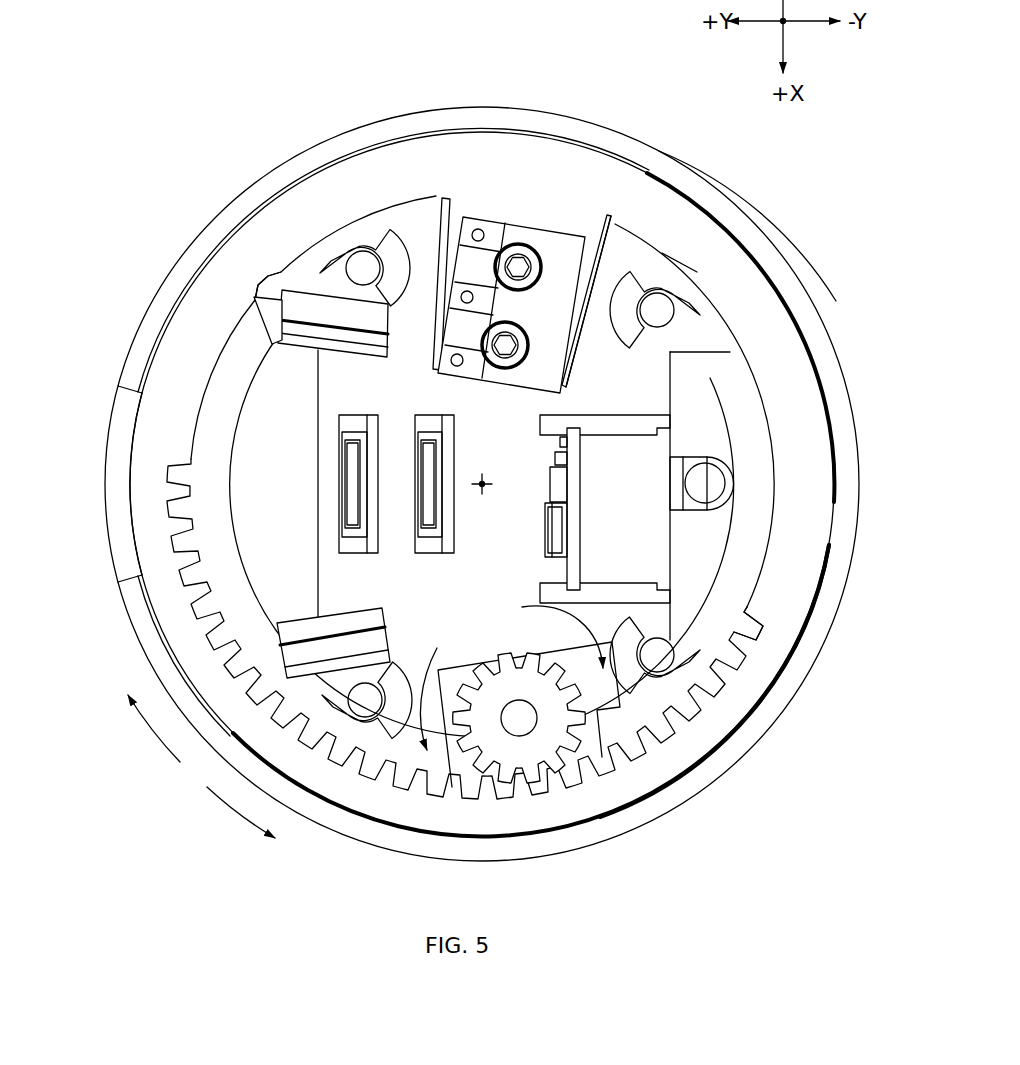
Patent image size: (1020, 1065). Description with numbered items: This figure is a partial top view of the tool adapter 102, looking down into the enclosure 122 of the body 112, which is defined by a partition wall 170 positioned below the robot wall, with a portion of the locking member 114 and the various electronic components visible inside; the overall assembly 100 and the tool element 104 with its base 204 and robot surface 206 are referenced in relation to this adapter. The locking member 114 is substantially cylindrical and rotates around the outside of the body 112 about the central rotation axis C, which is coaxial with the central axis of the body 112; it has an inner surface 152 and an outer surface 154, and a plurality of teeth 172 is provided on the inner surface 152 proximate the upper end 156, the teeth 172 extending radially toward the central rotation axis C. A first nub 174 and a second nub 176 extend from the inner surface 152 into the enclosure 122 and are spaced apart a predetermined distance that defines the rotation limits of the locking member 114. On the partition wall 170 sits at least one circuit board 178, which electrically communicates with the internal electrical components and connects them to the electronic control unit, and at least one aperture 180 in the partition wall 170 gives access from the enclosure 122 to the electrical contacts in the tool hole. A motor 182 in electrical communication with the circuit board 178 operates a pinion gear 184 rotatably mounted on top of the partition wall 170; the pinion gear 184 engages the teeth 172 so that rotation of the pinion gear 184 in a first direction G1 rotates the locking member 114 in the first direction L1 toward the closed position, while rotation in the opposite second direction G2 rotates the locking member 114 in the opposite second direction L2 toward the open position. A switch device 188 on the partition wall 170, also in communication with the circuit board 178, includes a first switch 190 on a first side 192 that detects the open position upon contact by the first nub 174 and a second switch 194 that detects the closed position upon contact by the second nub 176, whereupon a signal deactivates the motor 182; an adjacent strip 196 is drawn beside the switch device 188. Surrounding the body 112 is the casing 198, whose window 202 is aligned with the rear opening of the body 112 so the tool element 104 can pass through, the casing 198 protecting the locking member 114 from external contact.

The print fluid container / rotating assembly 100 is at (230, 116).
The tool adapter 102 is at (842, 210).
The tool element 104 is at (85, 438).
The body 112 is at (623, 272).
The locking member 114 is at (748, 702).
The enclosure 122 is at (300, 400).
The inner surface 152 is at (770, 537).
The outer surface 154 is at (832, 480).
The upper end 156 is at (806, 600).
The partition wall 170 is at (417, 237).
The teeth 172 is at (650, 724).
The first nub 174 is at (263, 290).
The second nub 176 is at (733, 613).
The circuit board 178 is at (577, 493).
The aperture 180 is at (380, 330).
The motor 182 is at (455, 668).
The pinion gear 184 is at (548, 752).
The switch device 188 is at (512, 276).
The first switch 190 is at (448, 196).
The first side 192 is at (463, 217).
The second switch 194 is at (637, 252).
The thin strip 196 is at (598, 238).
The casing 198 is at (798, 284).
The window 202 is at (118, 572).
The base 204 is at (103, 523).
The robot surface 206 is at (118, 412).
The central rotation axis C is at (484, 481).
The first direction G1 is at (433, 685).
The second direction G2 is at (545, 631).
The first direction L1 is at (233, 812).
The second direction L2 is at (155, 733).